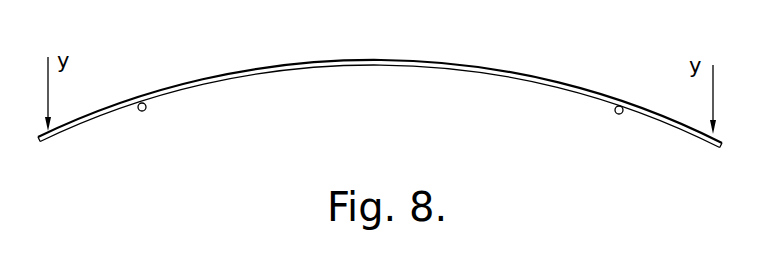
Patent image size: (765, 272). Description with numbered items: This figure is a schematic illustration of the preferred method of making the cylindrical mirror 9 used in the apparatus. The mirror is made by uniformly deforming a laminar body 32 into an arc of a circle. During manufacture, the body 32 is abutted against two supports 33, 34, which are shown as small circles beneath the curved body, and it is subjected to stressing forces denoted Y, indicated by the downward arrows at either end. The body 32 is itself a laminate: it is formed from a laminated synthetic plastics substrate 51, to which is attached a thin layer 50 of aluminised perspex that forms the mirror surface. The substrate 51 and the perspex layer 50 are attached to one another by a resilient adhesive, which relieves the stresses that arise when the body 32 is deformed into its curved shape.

The cylindrical mirror 9 is at (375, 66).
The laminar body 32 is at (443, 62).
The support 33 is at (146, 110).
The support 34 is at (615, 113).
The thin layer of aluminised perspex 50 is at (237, 77).
The laminated synthetic plastics substrate 51 is at (293, 63).